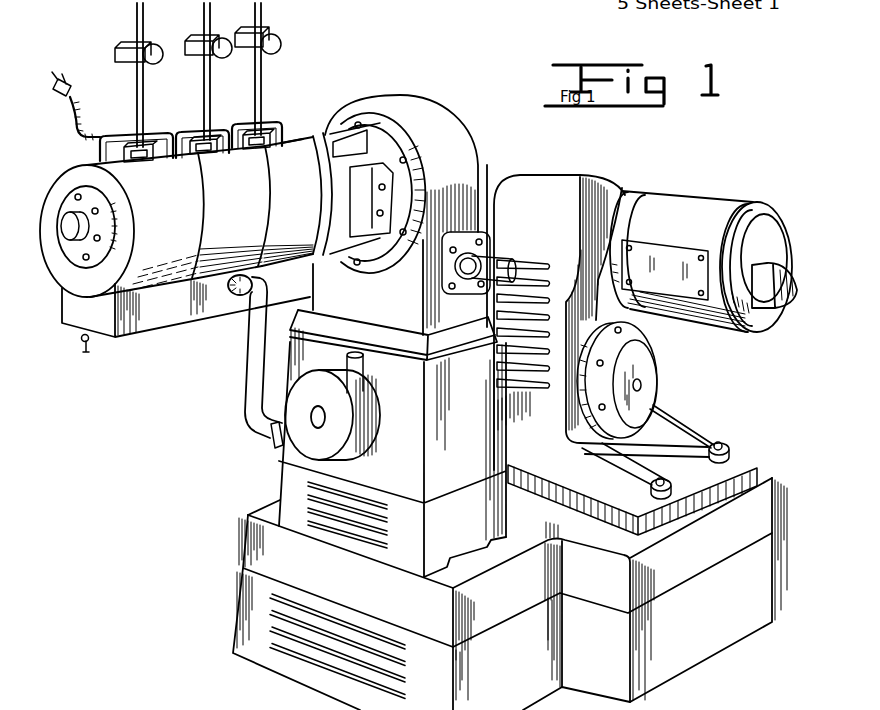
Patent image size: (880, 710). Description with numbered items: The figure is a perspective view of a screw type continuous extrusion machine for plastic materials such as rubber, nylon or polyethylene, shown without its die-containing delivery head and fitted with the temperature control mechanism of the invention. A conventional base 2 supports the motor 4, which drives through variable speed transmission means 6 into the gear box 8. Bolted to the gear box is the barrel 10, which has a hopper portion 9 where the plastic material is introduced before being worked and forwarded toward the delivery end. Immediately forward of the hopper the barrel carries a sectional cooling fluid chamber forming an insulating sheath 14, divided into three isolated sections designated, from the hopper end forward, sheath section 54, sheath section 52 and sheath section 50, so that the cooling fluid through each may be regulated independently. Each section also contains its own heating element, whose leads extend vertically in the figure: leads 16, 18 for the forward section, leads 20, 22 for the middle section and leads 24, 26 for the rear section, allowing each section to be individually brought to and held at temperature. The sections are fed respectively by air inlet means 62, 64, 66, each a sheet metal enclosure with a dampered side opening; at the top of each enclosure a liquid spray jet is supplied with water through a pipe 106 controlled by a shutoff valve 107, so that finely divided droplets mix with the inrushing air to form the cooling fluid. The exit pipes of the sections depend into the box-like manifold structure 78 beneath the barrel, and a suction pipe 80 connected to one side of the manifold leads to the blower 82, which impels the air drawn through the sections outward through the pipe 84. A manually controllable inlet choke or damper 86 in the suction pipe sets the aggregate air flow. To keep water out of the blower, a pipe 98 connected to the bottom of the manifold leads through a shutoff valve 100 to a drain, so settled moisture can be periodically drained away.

The base 2 is at (258, 555).
The motor 4 is at (710, 207).
The variable speed transmission means 6 is at (567, 193).
The gear box 8 is at (443, 130).
The hopper portion 9 is at (323, 133).
The barrel 10 is at (250, 112).
The insulating sheath 14 is at (200, 150).
The lead 16 is at (95, 147).
The lead 18 is at (167, 152).
The lead 20 is at (182, 157).
The lead 22 is at (200, 150).
The lead 24 is at (240, 150).
The lead 26 is at (282, 142).
The sheath section 50 is at (122, 162).
The sheath section 52 is at (187, 157).
The sheath section 54 is at (303, 157).
The air inlet means 62 is at (143, 143).
The air inlet means 64 is at (203, 140).
The air inlet means 66 is at (257, 128).
The manifold structure 78 is at (143, 320).
The suction pipe 80 is at (252, 357).
The blower 82 is at (288, 406).
The pipe 84 is at (368, 383).
The inlet choke or damper 86 is at (272, 442).
The pipe 98 is at (78, 345).
The shutoff valve 100 is at (85, 343).
The pipe 106 is at (134, 68).
The shutoff valve 107 is at (143, 56).